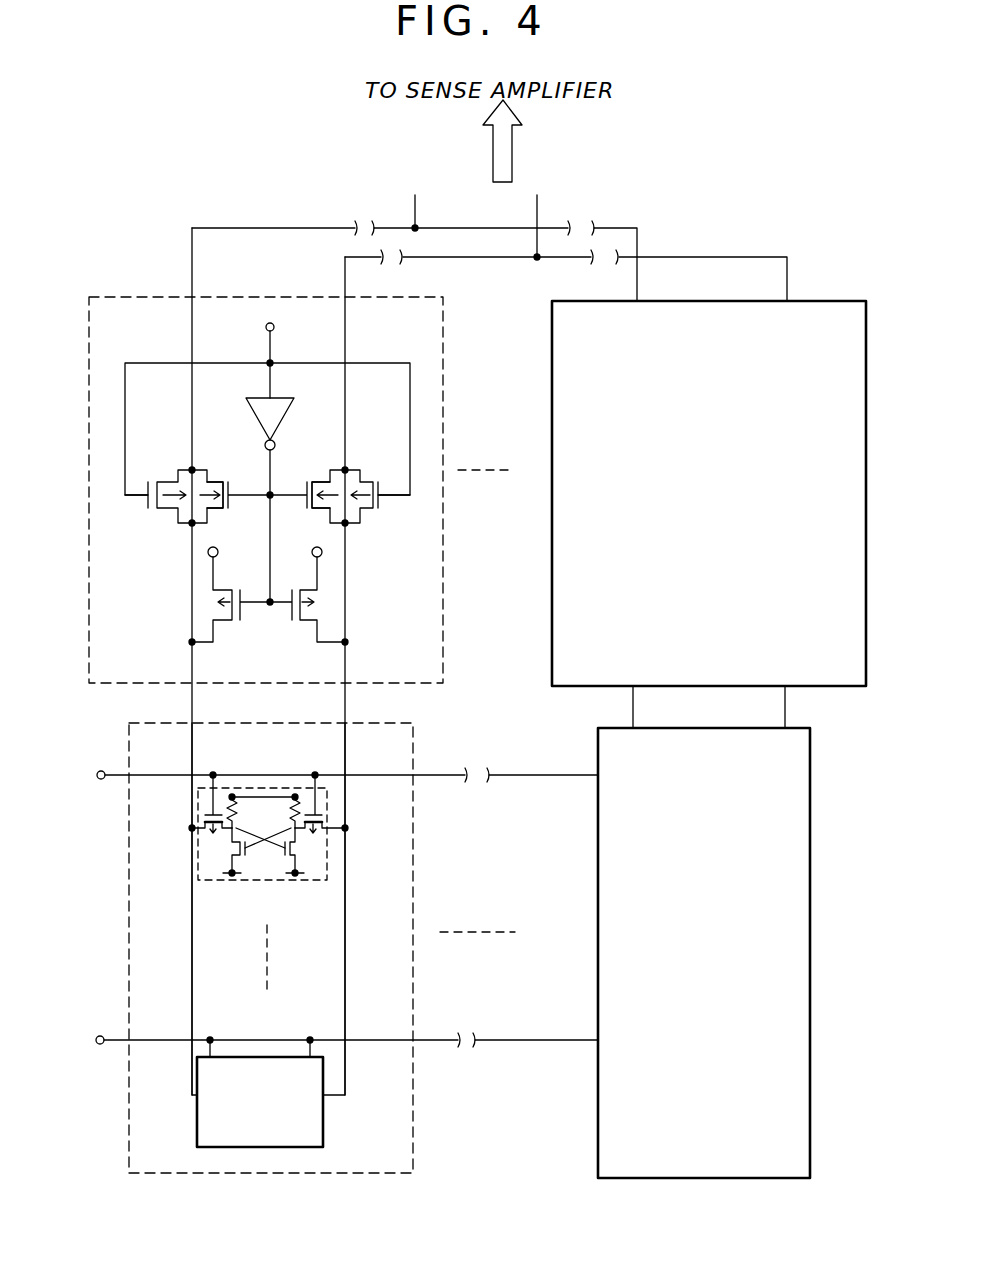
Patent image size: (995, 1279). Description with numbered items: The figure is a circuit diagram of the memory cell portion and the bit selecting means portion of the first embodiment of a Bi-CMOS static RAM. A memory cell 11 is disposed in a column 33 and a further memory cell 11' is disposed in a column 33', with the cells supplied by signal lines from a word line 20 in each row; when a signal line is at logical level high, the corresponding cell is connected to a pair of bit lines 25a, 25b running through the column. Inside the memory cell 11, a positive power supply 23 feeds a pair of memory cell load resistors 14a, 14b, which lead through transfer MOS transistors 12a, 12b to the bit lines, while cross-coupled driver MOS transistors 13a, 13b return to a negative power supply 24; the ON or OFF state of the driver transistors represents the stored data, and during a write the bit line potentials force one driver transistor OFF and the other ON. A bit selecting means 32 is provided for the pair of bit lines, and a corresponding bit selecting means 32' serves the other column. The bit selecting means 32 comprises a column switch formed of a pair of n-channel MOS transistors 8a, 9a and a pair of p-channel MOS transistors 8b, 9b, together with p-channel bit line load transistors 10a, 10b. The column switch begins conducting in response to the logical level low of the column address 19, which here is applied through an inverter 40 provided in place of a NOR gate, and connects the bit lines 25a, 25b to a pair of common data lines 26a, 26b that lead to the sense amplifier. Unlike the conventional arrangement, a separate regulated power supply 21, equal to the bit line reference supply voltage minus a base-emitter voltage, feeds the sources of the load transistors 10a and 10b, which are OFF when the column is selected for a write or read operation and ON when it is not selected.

The column address Yn 19 is at (289, 355).
The inverter 40 is at (280, 428).
The n-channel MOS transistor 8a is at (168, 480).
The n-channel MOS transistor 9a is at (215, 480).
The p-channel MOS transistor 8b is at (361, 480).
The p-channel MOS transistor 9b is at (315, 480).
The VRC power supply 21 is at (208, 552).
The bit line load transistor 10a is at (223, 625).
The bit line load transistor 10b is at (307, 625).
The bit selecting means 32 is at (300, 490).
The bit selecting means 32' is at (709, 457).
The common data line 26a is at (417, 215).
The common data line 26b is at (539, 215).
The column 33 is at (319, 948).
The column 33' is at (729, 953).
The word line 20 is at (319, 924).
The memory cell 11 is at (265, 838).
The memory cell 11' is at (290, 1093).
The VCC power supply 23 is at (268, 789).
The memory cell load resistor 14a is at (222, 816).
The memory cell load resistor 14b is at (300, 800).
The transfer MOS transistor 12a is at (210, 832).
The transfer MOS transistor 12b is at (318, 832).
The driver MOS transistor 13a is at (227, 850).
The driver MOS transistor 13b is at (302, 853).
The VEE power supply 24 is at (260, 904).
The bit line 25a is at (192, 1005).
The bit line 25b is at (342, 983).